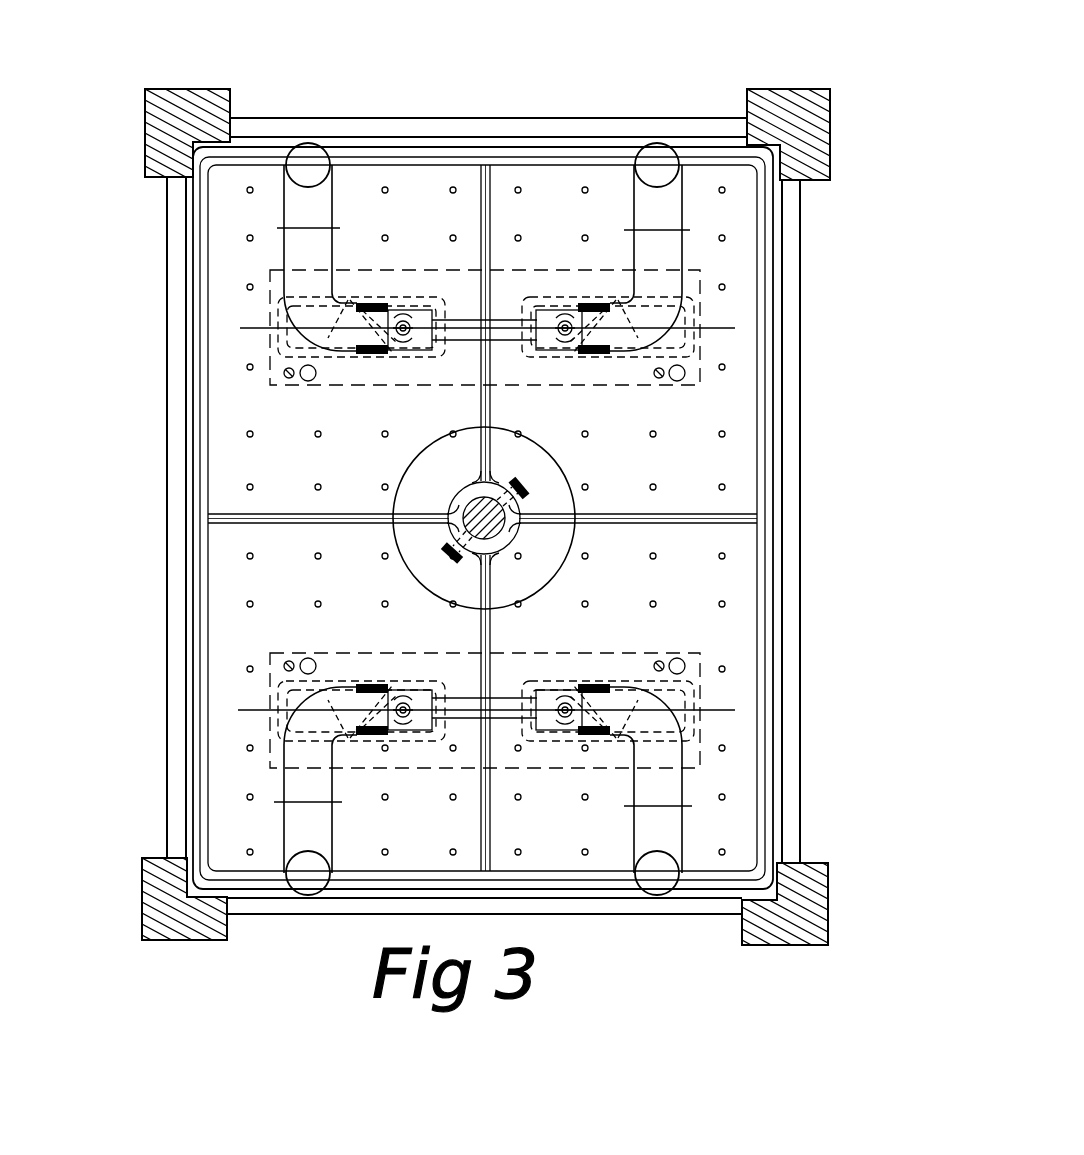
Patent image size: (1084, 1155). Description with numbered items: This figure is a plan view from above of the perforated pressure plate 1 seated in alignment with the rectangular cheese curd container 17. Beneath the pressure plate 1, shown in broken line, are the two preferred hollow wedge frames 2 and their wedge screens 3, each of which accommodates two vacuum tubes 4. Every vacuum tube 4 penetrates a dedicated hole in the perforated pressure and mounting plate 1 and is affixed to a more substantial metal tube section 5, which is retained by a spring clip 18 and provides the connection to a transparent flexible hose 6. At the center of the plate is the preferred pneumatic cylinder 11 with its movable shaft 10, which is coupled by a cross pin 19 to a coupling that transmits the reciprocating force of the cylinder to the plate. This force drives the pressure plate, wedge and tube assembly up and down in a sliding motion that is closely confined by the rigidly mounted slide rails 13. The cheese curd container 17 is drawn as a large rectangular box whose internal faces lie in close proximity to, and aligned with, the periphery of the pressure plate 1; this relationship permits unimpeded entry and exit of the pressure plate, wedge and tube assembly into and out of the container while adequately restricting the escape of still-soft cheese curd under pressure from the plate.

The perforated pressure plate 1 is at (777, 447).
The hollow wedge frame 2 is at (706, 340).
The wedge screen 3 is at (708, 282).
The vacuum tube 4 is at (566, 315).
The metal tube section 5 is at (688, 242).
The transparent flexible hose 6 is at (676, 140).
The movable shaft 10 is at (467, 502).
The pneumatic cylinder 11 is at (404, 567).
The slide rail 13 is at (153, 856).
The cheese curd container 17 is at (165, 710).
The spring clip 18 is at (373, 681).
The cross pin 19 is at (441, 557).